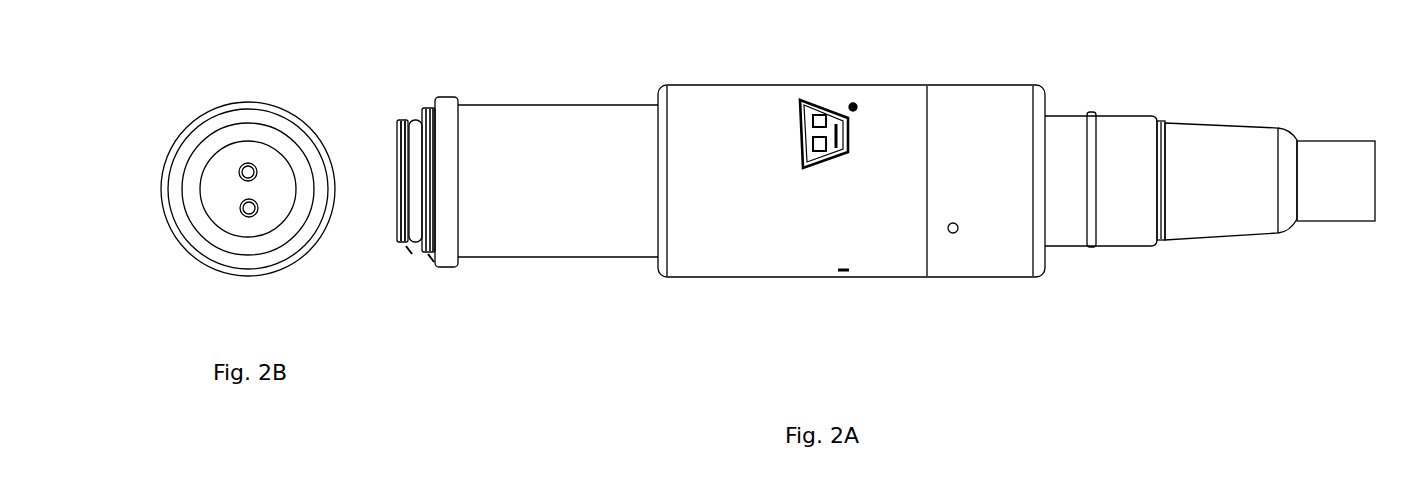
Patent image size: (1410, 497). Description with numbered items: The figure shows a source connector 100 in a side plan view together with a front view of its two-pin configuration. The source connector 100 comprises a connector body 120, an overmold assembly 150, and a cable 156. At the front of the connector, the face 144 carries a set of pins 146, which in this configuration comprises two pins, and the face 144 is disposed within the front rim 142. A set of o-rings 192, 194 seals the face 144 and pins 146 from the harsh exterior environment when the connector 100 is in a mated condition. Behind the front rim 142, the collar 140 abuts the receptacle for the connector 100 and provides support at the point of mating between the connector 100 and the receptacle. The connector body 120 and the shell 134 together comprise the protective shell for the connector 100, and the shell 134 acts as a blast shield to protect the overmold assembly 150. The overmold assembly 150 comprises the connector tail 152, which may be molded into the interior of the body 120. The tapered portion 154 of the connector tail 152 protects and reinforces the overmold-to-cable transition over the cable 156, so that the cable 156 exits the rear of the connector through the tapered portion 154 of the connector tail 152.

In FIG. 2A, the source connector 100 is at (645, 338).
In FIG. 2A, the connector body 120 is at (817, 273).
In FIG. 2A, the shell 134 is at (1037, 125).
In FIG. 2B, the collar 140 is at (178, 232).
In FIG. 2A, the collar 140 is at (456, 240).
In FIG. 2B, the front rim 142 is at (208, 148).
In FIG. 2A, the front rim 142 is at (398, 142).
In FIG. 2B, the face 144 is at (208, 188).
In FIG. 2B, the set of pins 146 is at (240, 188).
In FIG. 2A, the overmold assembly 150 is at (1223, 275).
In FIG. 2A, the connector tail 152 is at (1125, 213).
In FIG. 2A, the tapered portion 154 is at (1223, 175).
In FIG. 2A, the cable 156 is at (1348, 173).
In FIG. 2A, the o-ring 192 is at (405, 250).
In FIG. 2A, the o-ring 194 is at (428, 258).